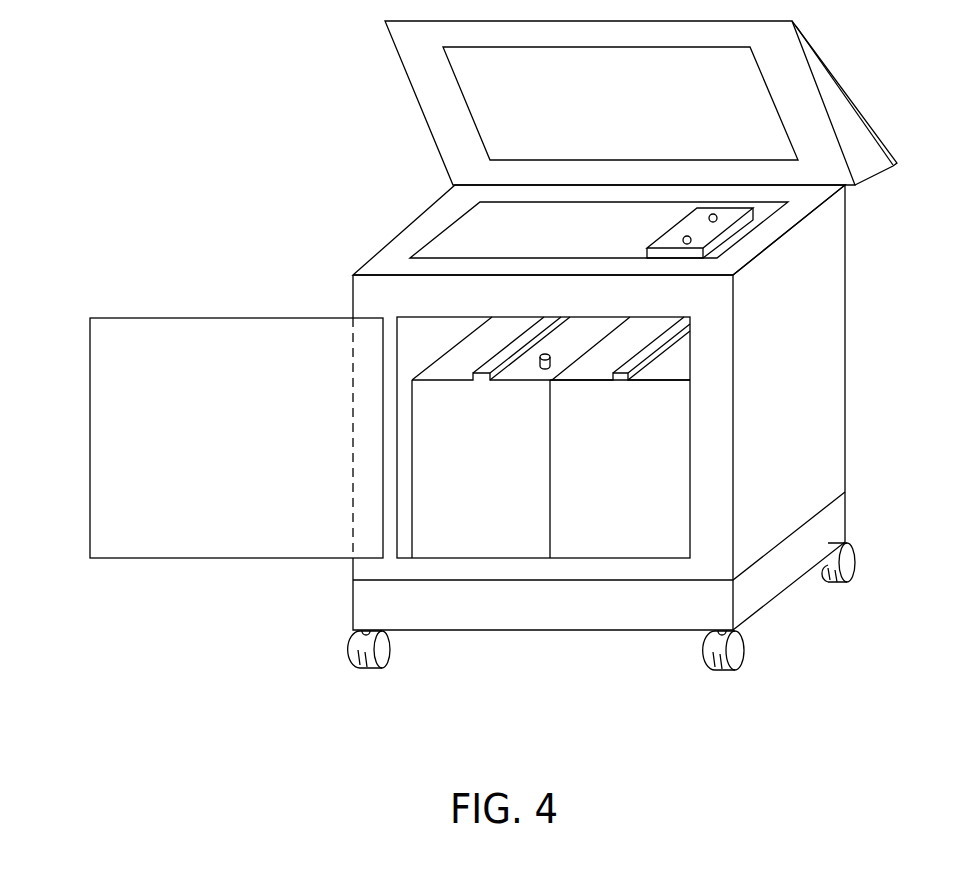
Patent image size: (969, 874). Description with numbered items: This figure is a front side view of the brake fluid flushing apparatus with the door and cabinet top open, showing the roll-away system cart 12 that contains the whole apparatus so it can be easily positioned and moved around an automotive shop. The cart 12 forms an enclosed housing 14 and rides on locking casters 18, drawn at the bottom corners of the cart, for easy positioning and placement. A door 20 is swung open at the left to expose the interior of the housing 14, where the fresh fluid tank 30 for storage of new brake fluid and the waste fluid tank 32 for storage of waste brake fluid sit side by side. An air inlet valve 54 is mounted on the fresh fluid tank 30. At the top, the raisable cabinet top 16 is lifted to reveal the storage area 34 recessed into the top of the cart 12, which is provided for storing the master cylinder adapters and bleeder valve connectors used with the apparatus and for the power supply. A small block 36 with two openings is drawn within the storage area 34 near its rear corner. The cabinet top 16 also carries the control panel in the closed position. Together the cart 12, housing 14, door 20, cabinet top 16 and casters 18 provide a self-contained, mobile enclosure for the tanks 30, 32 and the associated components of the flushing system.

The roll-away system cart 12 is at (792, 366).
The enclosed housing 14 is at (422, 338).
The cabinet top 16 is at (826, 88).
The locking casters 18 is at (853, 553).
The door 20 is at (125, 423).
The fresh fluid tank 30 is at (453, 523).
The waste fluid tank 32 is at (658, 463).
The storage area 34 is at (468, 243).
The mounting block 36 is at (708, 230).
The air inlet valve 54 is at (538, 372).